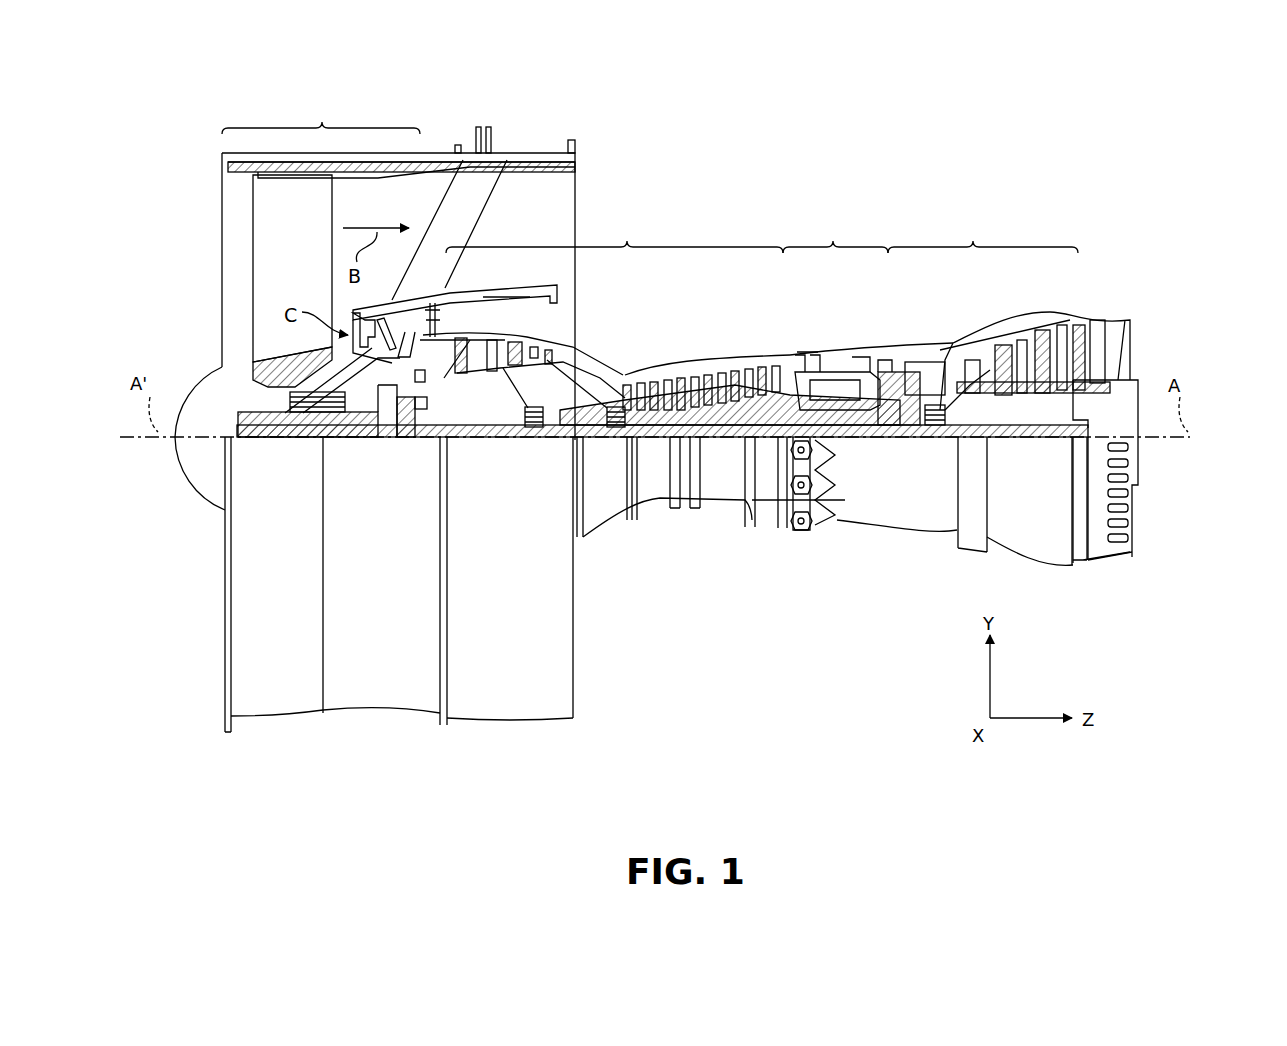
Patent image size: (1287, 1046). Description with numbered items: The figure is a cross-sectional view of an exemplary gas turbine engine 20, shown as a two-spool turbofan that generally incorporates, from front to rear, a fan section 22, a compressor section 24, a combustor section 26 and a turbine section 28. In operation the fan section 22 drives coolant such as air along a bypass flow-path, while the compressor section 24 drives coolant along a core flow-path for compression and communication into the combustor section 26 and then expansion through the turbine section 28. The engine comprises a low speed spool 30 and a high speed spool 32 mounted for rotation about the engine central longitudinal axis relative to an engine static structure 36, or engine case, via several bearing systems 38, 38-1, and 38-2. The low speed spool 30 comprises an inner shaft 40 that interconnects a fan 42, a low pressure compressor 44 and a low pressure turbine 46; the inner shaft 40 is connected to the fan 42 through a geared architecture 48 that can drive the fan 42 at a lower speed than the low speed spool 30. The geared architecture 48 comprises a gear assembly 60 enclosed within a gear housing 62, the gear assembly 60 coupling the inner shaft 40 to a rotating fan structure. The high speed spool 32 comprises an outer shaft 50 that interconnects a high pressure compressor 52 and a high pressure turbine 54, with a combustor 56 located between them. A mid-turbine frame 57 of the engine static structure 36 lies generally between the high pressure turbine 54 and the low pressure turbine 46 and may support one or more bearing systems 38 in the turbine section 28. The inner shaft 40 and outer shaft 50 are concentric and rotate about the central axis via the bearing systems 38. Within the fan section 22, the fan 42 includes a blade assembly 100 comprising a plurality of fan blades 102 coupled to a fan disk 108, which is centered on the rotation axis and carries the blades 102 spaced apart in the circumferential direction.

The gas turbine engine 20 is at (808, 128).
The fan section 22 is at (321, 116).
The compressor section 24 is at (673, 321).
The combustor section 26 is at (868, 286).
The turbine section 28 is at (999, 306).
The low speed spool 30 is at (728, 448).
The high speed spool 32 is at (775, 368).
The engine static structure 36 is at (763, 500).
The bearing system 38 is at (945, 437).
The bearing system 38-1 is at (300, 440).
The bearing system 38-2 is at (535, 440).
The inner shaft 40 is at (590, 440).
The fan 42 is at (263, 228).
The low pressure compressor 44 is at (505, 340).
The low pressure turbine 46 is at (1020, 326).
The geared architecture 48 is at (402, 444).
The outer shaft 50 is at (845, 437).
The high pressure compressor 52 is at (735, 405).
The high pressure turbine 54 is at (898, 360).
The combustor 56 is at (835, 370).
The mid-turbine frame 57 is at (935, 400).
The gear assembly 60 is at (427, 408).
The gear housing 62 is at (425, 380).
The blade assembly 100 is at (235, 298).
The fan blades 102 is at (304, 284).
The fan disk 108 is at (237, 385).